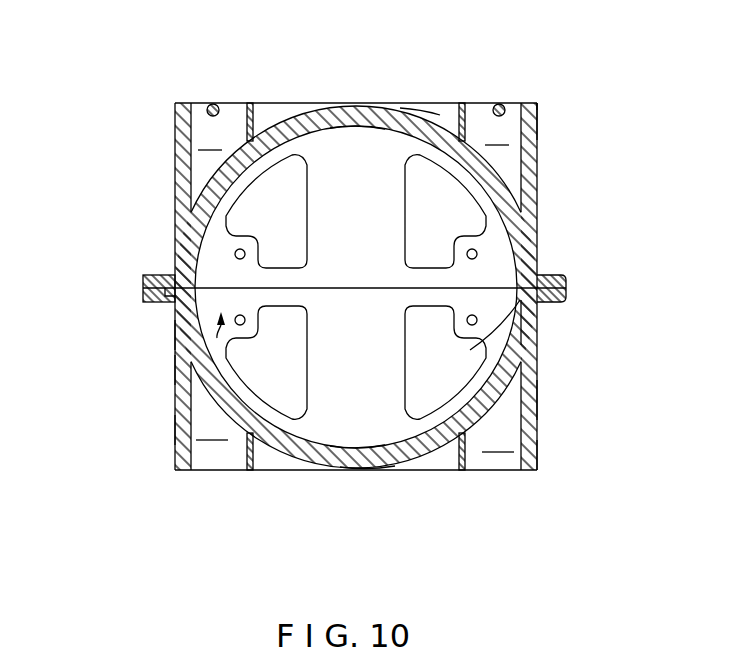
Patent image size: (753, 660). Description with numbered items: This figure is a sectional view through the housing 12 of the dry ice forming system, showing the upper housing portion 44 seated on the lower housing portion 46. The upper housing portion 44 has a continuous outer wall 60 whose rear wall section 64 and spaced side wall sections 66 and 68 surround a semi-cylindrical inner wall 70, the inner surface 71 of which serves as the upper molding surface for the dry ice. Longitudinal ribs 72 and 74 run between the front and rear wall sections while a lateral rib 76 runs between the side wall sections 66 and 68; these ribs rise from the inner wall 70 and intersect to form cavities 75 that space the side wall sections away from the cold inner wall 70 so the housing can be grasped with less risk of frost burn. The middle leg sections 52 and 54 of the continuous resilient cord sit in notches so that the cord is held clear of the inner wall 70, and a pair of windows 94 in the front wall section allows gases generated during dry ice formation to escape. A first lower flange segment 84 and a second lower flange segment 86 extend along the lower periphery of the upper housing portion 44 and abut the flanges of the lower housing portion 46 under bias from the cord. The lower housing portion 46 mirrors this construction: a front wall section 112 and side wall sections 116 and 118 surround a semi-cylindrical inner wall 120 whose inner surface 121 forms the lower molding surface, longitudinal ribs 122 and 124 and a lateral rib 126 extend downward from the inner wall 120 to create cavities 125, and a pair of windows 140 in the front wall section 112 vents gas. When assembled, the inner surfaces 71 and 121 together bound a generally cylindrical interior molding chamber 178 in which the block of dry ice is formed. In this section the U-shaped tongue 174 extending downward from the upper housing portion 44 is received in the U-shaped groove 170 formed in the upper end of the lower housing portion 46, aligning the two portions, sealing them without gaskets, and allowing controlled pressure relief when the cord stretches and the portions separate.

The housing 12 is at (665, 103).
The upper housing portion 44 is at (548, 106).
The lower housing portion 46 is at (550, 413).
The middle leg section 52 is at (208, 104).
The middle leg section 54 is at (501, 104).
The outer wall 60 is at (176, 148).
The rear wall section 64 is at (492, 257).
The side wall section 66 is at (176, 108).
The side wall section 68 is at (538, 137).
The inner wall 70 is at (374, 105).
The inner surface 71 is at (366, 112).
The longitudinal rib 72 is at (254, 103).
The longitudinal rib 74 is at (462, 103).
The cavities 75 is at (353, 136).
The lateral rib 76 is at (427, 105).
The first lower flange segment 84 is at (153, 272).
The second lower flange segment 86 is at (566, 278).
The windows 94 is at (420, 210).
The front wall section 112 is at (490, 322).
The side wall section 116 is at (177, 430).
The side wall section 118 is at (538, 455).
The inner wall 120 is at (367, 465).
The inner surface 121 is at (347, 448).
The longitudinal rib 122 is at (252, 466).
The longitudinal rib 124 is at (460, 470).
The cavities 125 is at (355, 434).
The lateral rib 126 is at (207, 460).
The windows 140 is at (425, 366).
The U-shaped groove 170 is at (177, 337).
The U-shaped tongue 174 is at (147, 293).
The interior molding chamber 178 is at (177, 373).